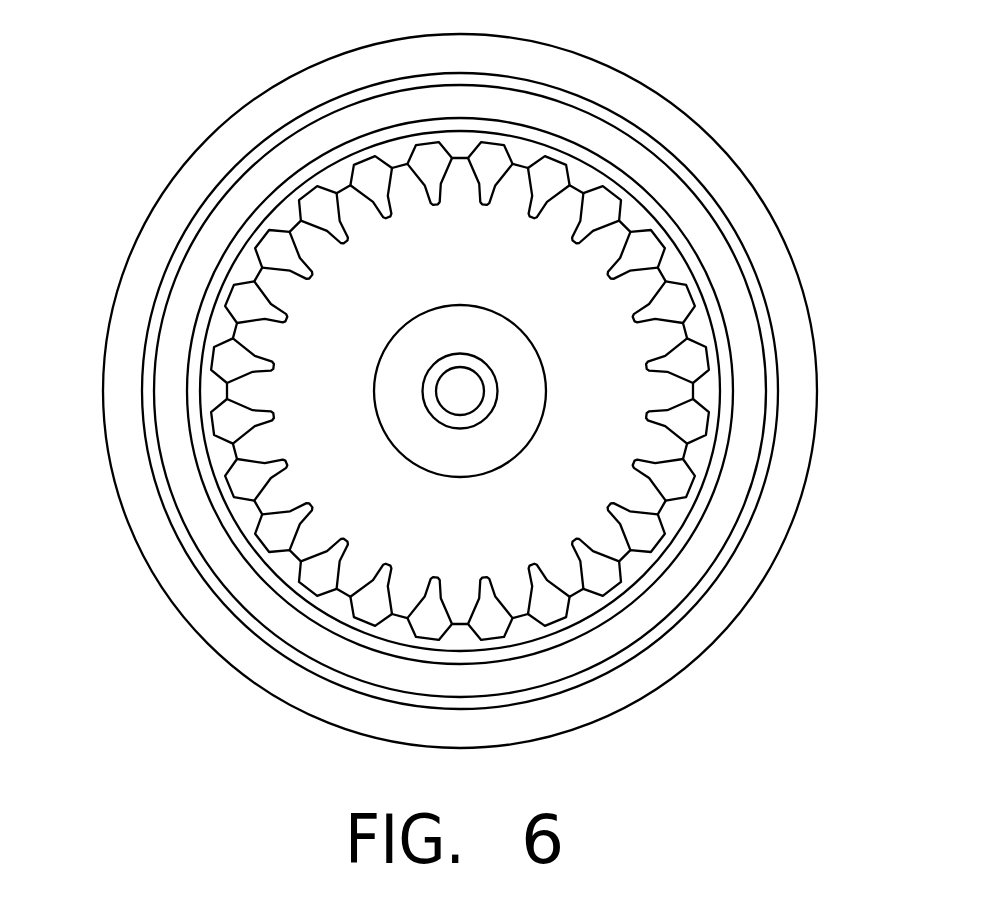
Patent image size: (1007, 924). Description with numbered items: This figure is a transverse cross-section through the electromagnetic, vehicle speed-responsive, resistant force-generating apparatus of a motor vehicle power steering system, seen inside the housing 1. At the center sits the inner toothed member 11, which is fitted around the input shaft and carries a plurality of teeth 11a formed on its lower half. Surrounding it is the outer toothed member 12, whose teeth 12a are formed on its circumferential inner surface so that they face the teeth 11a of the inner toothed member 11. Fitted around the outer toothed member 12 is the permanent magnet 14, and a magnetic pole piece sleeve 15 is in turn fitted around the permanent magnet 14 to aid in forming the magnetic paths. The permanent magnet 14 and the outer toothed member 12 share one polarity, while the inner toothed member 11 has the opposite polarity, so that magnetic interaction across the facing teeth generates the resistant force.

The housing 1 is at (187, 180).
The inner toothed member 11 is at (569, 327).
The teeth of inner toothed member 11a is at (615, 233).
The outer toothed member 12 is at (476, 391).
The teeth of outer toothed member 12a is at (699, 370).
The permanent magnet 14 is at (710, 483).
The magnetic pole piece sleeve 15 is at (690, 580).